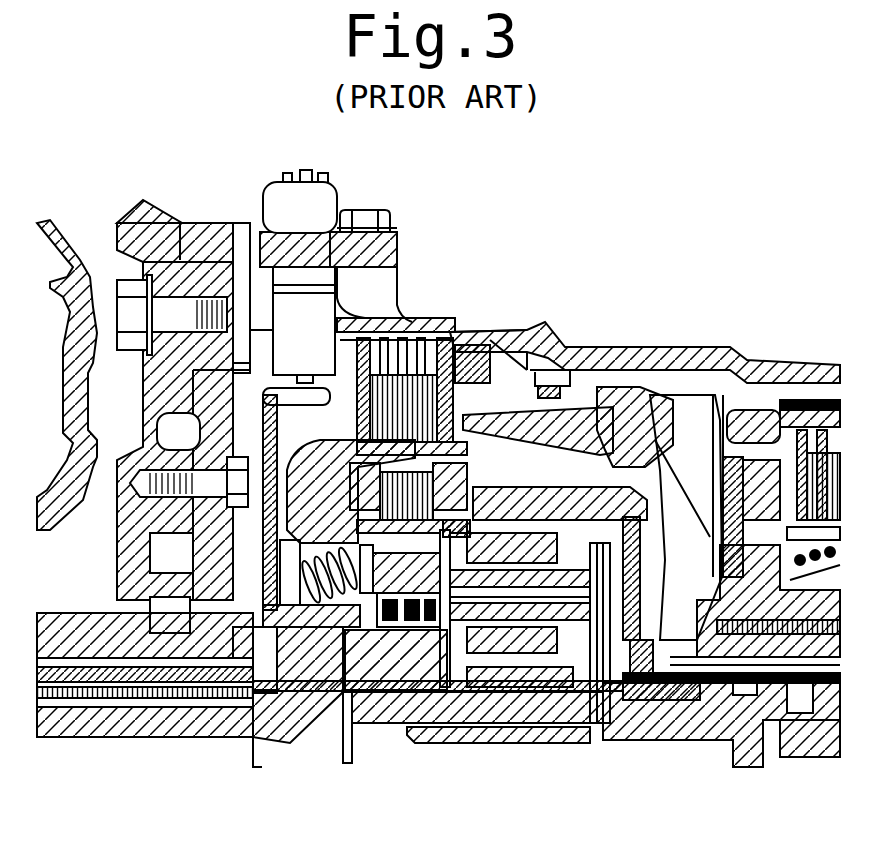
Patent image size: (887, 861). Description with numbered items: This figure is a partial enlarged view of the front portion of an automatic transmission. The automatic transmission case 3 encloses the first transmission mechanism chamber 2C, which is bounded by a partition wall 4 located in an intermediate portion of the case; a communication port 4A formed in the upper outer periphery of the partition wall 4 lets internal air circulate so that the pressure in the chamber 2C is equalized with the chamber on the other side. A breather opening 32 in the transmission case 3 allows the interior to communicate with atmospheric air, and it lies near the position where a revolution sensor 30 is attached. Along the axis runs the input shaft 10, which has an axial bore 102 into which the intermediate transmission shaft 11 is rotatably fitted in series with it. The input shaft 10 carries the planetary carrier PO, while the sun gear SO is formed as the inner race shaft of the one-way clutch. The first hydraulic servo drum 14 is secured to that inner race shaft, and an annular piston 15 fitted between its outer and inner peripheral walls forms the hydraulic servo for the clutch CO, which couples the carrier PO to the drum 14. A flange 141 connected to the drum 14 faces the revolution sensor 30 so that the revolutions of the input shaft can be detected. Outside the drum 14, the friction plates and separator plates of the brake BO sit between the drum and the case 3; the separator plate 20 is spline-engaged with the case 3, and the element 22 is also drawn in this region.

The breather opening 32 is at (262, 228).
The revolution sensor 30 is at (300, 300).
The brake BO is at (417, 326).
The separator plate 20 is at (437, 340).
The first transmission mechanism chamber 2C is at (477, 383).
The automatic transmission case 3 is at (567, 357).
The communication port 4A is at (653, 380).
The partition wall 4 is at (663, 463).
The flange 141 is at (275, 388).
The piston 22 is at (390, 455).
The clutch CO is at (433, 463).
The planetary carrier PO is at (510, 487).
The annular piston 15 is at (270, 522).
The first hydraulic servo drum 14 is at (275, 573).
The input shaft 10 is at (150, 720).
The axial bore 102 is at (378, 740).
The sun gear SO is at (493, 735).
The intermediate transmission shaft 11 is at (682, 725).